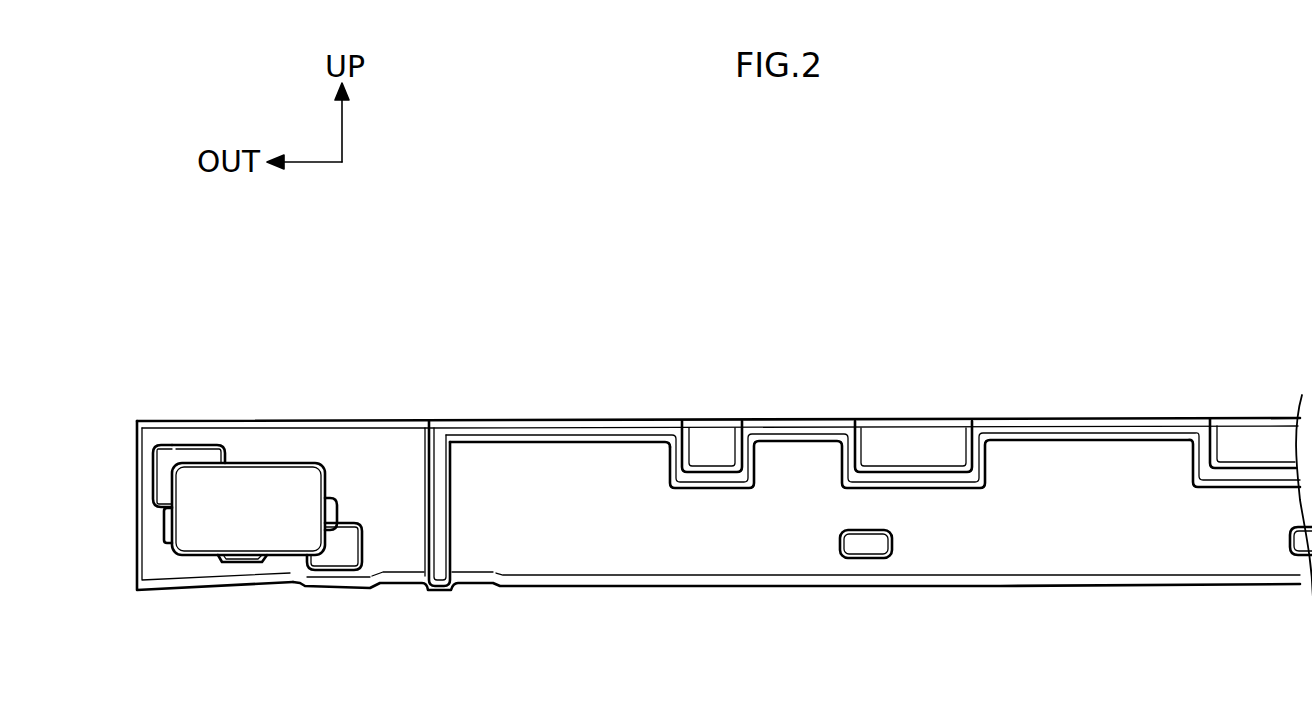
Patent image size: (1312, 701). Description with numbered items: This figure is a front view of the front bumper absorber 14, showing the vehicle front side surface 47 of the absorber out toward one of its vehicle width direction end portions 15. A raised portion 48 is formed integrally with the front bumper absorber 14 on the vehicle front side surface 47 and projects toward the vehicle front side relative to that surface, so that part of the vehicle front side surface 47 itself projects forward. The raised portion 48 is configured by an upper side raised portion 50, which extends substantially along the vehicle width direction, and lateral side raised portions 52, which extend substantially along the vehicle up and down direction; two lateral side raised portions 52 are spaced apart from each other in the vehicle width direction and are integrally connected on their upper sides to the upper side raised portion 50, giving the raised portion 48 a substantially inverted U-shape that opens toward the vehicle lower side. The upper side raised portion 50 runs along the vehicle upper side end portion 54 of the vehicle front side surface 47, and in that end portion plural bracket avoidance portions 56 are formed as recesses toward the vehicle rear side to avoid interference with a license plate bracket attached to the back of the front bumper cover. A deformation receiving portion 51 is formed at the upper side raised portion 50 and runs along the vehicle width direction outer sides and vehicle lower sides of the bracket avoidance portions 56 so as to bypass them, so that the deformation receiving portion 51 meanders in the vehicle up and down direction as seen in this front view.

The front bumper absorber 14 is at (285, 421).
The vehicle width direction end portion 15 is at (355, 420).
The vehicle front side surface 47 is at (357, 458).
The raised portion 48 is at (505, 421).
The upper side raised portion 50 is at (573, 421).
The deformation receiving portion 51 is at (932, 490).
The lateral side raised portion 52 is at (437, 524).
The vehicle upper side end portion 54 is at (652, 421).
The bracket avoidance portion 56 is at (712, 445).